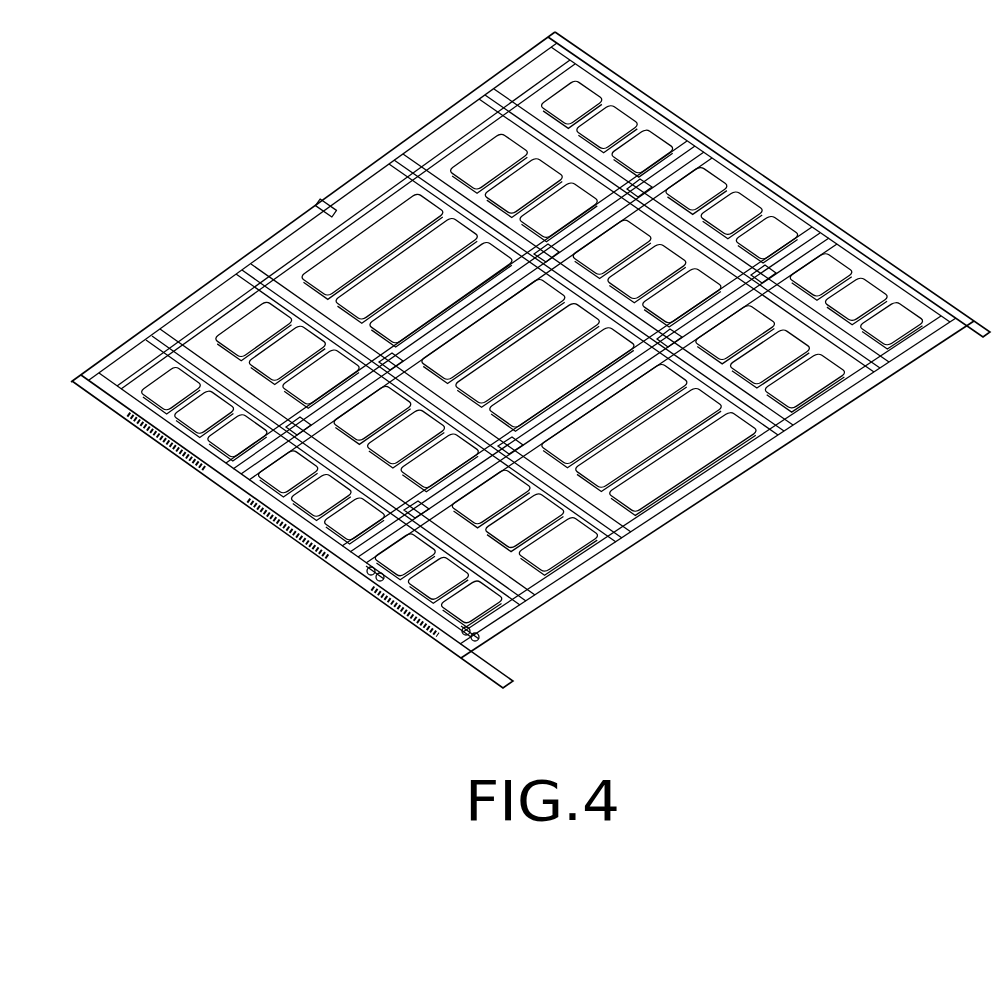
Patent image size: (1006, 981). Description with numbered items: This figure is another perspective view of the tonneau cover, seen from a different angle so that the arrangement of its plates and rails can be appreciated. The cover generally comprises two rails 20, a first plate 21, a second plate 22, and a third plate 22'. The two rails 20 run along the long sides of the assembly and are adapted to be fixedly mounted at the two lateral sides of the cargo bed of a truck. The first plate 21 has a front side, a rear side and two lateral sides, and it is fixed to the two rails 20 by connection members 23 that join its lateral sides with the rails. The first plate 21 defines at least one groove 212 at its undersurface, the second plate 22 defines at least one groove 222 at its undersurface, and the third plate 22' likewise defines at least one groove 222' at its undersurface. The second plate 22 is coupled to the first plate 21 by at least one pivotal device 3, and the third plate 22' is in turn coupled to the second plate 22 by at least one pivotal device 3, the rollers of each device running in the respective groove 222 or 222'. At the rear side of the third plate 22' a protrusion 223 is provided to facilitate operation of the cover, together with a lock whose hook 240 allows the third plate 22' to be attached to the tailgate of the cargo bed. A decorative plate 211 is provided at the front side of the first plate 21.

The rail 20 is at (965, 338).
The first plate 21 is at (697, 457).
The second plate 22 is at (740, 152).
The third plate 22' is at (346, 224).
The connection member 23 is at (375, 587).
The decorative plate 211 is at (823, 407).
The groove 212 is at (590, 500).
The groove 222 is at (478, 527).
The groove 222' is at (296, 266).
The protrusion 223 is at (378, 152).
The hook 240 is at (320, 200).
The pivotal device 3 is at (633, 184).